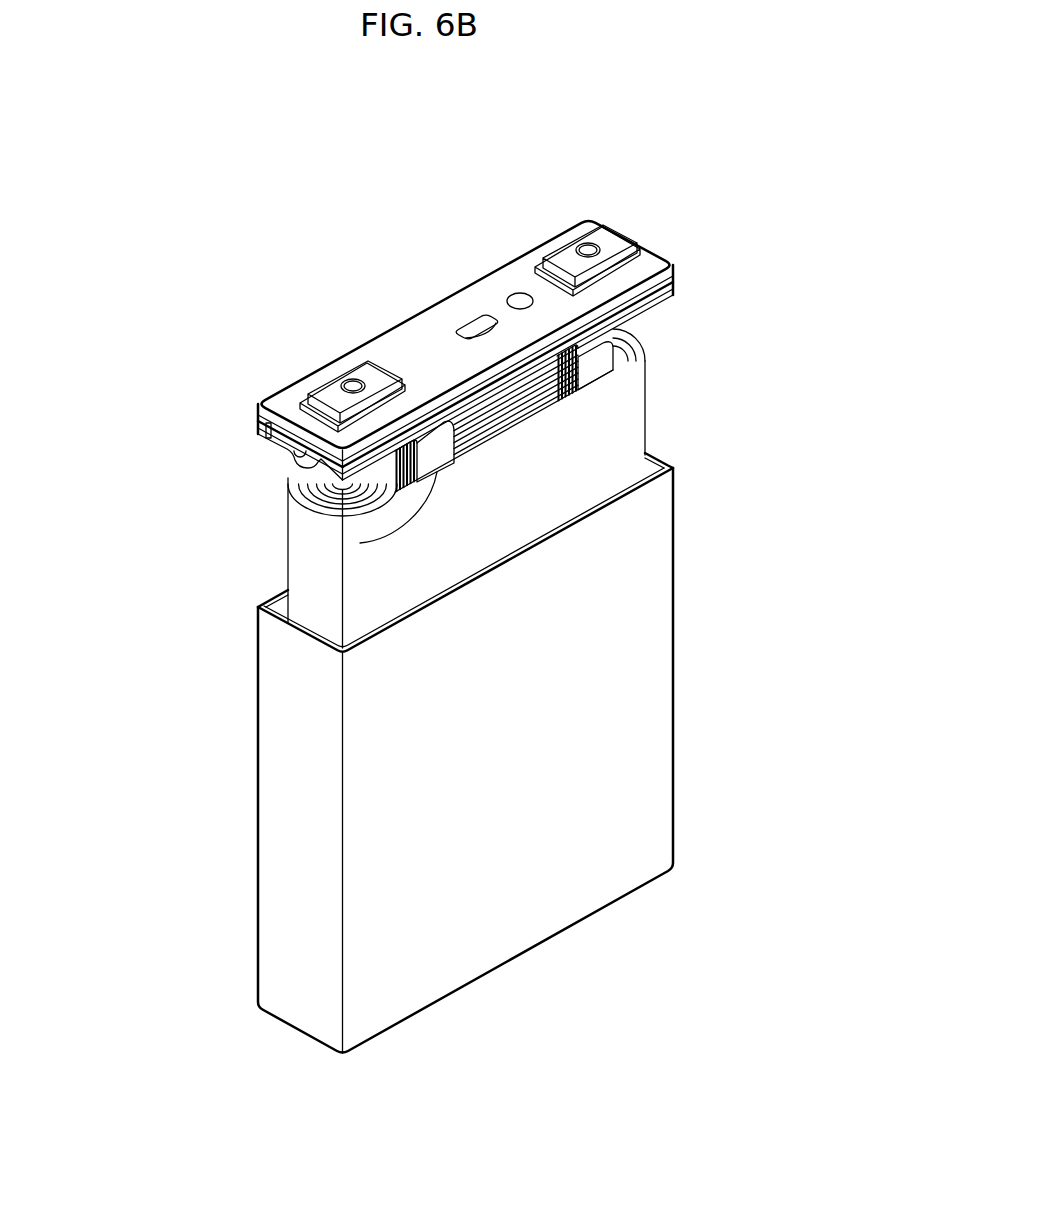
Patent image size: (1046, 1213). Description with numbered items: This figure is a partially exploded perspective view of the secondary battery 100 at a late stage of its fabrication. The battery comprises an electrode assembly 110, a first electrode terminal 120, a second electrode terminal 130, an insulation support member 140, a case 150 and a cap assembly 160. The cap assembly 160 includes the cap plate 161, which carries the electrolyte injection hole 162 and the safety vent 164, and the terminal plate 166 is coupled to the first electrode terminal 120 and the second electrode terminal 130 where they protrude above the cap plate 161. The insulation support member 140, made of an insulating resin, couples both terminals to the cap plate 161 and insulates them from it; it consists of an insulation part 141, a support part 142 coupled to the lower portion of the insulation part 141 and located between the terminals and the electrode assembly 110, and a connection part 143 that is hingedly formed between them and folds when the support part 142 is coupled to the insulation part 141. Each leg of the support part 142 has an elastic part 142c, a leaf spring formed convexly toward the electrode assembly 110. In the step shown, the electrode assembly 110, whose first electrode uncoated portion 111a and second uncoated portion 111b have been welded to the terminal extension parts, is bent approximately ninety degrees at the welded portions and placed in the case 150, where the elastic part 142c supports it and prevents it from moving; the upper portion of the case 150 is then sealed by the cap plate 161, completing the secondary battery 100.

The secondary battery 100 is at (122, 158).
The electrode assembly 110 is at (470, 487).
The first electrode uncoated portion 111a is at (360, 543).
The second electrode uncoated region 111b is at (603, 354).
The first electrode terminal 120 is at (353, 383).
The second electrode terminal 130 is at (588, 247).
The insulation support member 140 is at (215, 445).
The insulation part 141 is at (265, 427).
The support part 142 is at (280, 445).
The elastic part 142c is at (298, 470).
The connection part 143 is at (268, 432).
The case 150 is at (663, 685).
The cap assembly 160 is at (400, 306).
The cap plate 161 is at (648, 255).
The electrolyte injection hole 162 is at (518, 305).
The safety vent 164 is at (472, 330).
The terminal plate 166 is at (568, 251).